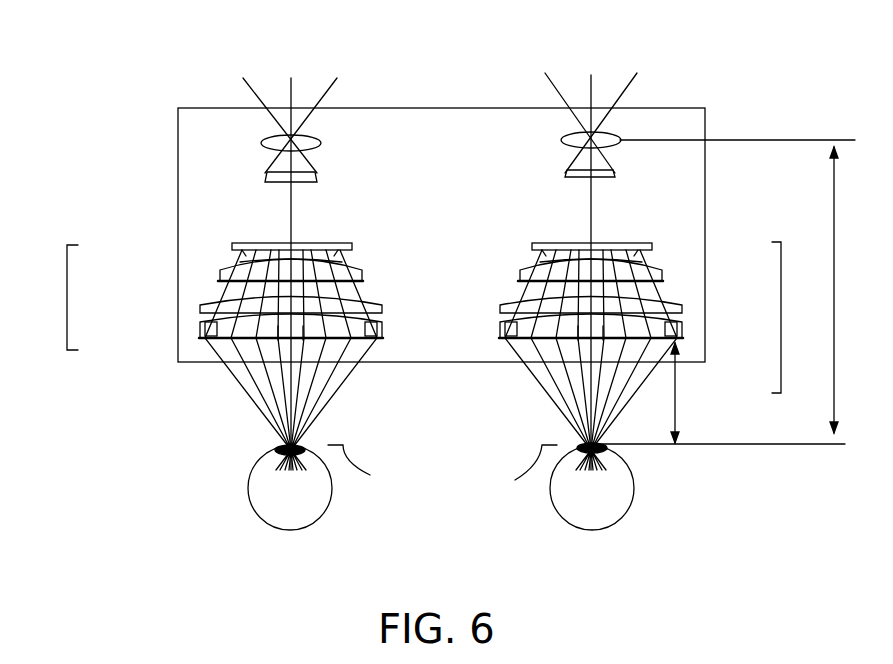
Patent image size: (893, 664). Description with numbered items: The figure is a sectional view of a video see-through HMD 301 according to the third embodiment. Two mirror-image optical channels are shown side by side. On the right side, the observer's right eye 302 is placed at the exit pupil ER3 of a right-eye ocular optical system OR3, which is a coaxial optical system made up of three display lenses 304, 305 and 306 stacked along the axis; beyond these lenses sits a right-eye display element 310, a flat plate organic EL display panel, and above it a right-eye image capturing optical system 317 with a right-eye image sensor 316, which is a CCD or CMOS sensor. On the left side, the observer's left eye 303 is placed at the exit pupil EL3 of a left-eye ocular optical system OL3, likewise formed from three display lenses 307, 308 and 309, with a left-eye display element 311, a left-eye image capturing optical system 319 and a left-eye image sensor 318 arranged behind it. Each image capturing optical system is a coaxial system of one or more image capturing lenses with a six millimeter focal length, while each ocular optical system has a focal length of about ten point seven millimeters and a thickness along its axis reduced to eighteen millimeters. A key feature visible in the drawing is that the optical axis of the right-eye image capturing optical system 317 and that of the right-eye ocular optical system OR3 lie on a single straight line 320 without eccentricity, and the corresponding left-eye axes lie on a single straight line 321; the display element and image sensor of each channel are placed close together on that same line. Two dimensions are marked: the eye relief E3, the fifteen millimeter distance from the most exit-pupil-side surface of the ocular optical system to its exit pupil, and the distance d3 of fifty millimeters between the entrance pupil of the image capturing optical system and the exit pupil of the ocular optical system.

The video see-through HMD 301 is at (200, 125).
The observer's right eye 302 is at (608, 495).
The observer's left eye 303 is at (305, 474).
The display lens 304 is at (636, 350).
The display lens 305 is at (639, 321).
The display lens 306 is at (642, 262).
The right-eye display element 310 is at (662, 234).
The display lens 307 is at (231, 329).
The display lens 308 is at (230, 301).
The display lens 309 is at (230, 266).
The left-eye display element 311 is at (215, 234).
The right-eye image sensor 316 is at (618, 168).
The right-eye image capturing optical system 317 is at (605, 138).
The left-eye image sensor 318 is at (263, 173).
The left-eye image capturing optical system 319 is at (273, 133).
The straight line 320 is at (591, 75).
The straight line 321 is at (291, 78).
The left-eye ocular optical system OL3 is at (48, 297).
The right-eye ocular optical system OR3 is at (800, 317).
The exit pupil EL3 is at (374, 470).
The exit pupil ER3 is at (523, 480).
The eye relief E3 is at (691, 393).
The distance d3 is at (734, 292).